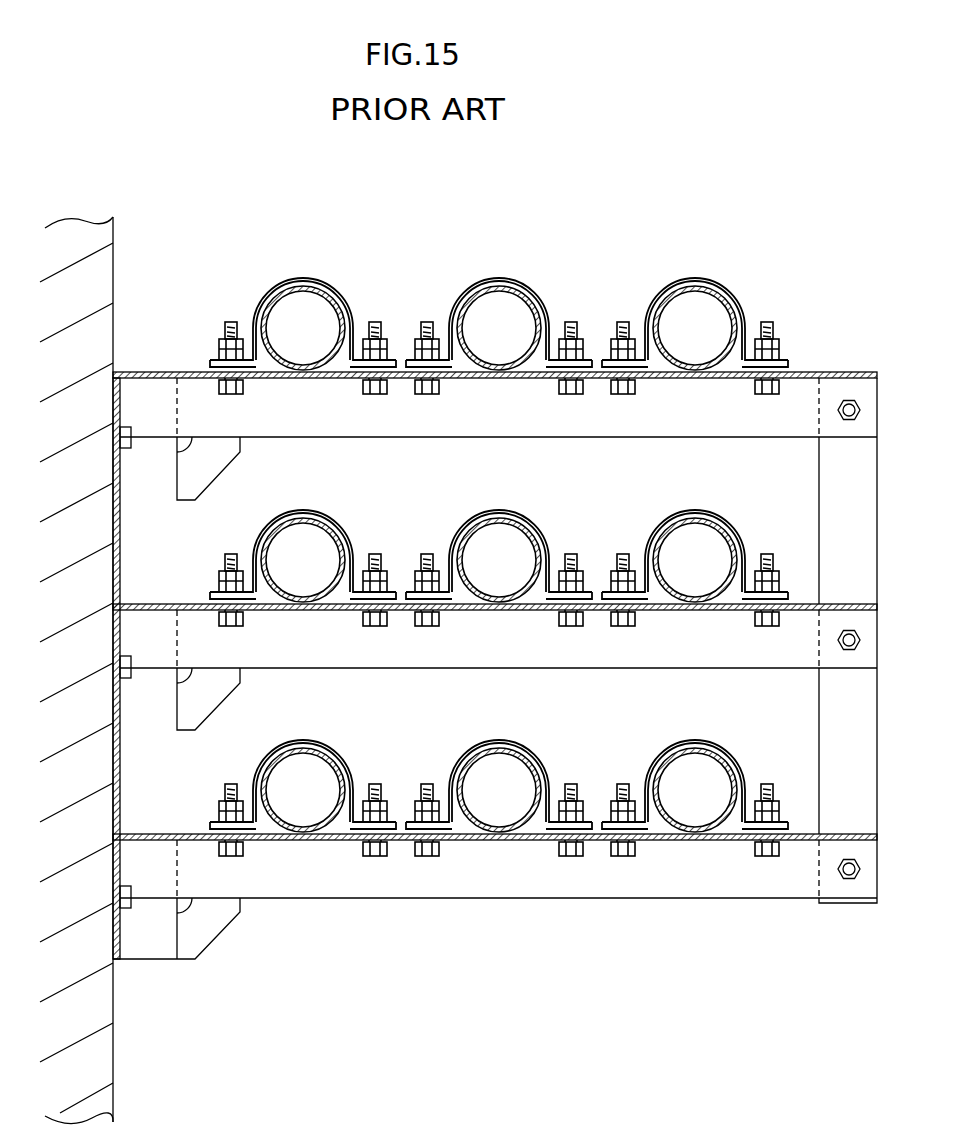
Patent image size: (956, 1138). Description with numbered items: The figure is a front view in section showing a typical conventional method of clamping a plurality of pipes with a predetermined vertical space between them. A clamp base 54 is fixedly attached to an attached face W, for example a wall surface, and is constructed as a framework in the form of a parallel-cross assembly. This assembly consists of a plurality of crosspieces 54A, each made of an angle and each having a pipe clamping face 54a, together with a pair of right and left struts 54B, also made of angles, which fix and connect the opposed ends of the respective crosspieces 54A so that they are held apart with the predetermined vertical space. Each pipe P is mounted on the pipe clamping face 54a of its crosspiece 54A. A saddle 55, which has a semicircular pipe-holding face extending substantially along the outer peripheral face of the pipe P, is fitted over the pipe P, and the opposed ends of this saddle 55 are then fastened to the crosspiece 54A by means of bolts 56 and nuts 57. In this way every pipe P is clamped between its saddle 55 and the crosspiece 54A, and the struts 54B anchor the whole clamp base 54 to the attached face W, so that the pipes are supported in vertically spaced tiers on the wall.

The clamp base 54 is at (495, 636).
The crosspiece 54A is at (468, 425).
The strut 54B is at (843, 747).
The pipe clamping face 54a is at (805, 372).
The saddle 55 is at (498, 278).
The bolt 56 is at (362, 394).
The nut 57 is at (220, 343).
The pipe P is at (273, 345).
The attached face W is at (113, 1057).